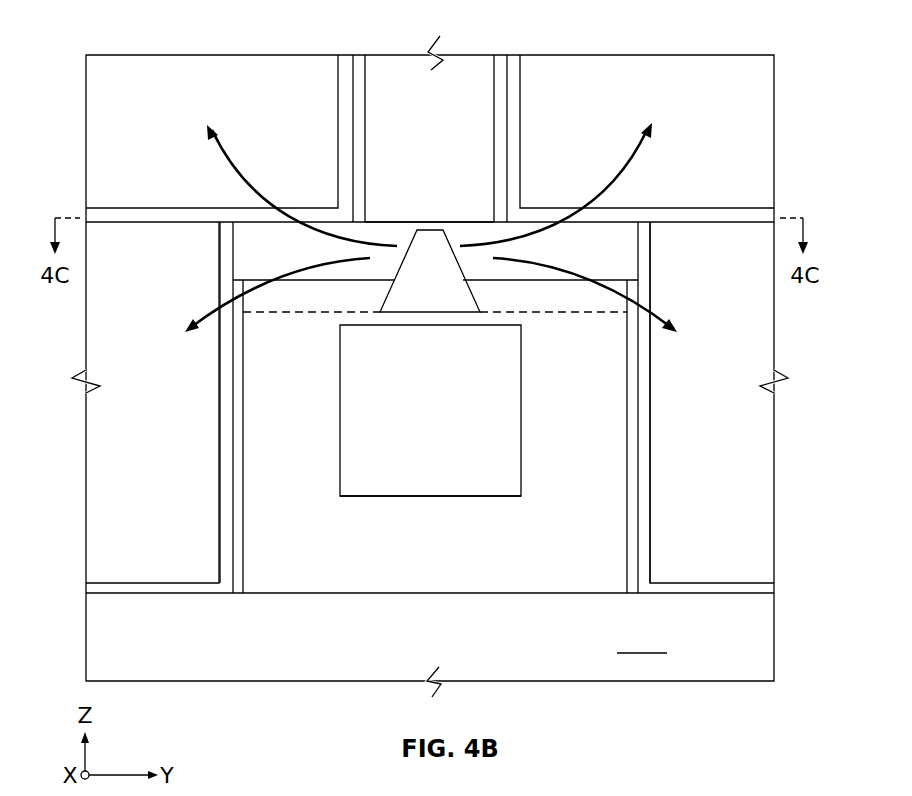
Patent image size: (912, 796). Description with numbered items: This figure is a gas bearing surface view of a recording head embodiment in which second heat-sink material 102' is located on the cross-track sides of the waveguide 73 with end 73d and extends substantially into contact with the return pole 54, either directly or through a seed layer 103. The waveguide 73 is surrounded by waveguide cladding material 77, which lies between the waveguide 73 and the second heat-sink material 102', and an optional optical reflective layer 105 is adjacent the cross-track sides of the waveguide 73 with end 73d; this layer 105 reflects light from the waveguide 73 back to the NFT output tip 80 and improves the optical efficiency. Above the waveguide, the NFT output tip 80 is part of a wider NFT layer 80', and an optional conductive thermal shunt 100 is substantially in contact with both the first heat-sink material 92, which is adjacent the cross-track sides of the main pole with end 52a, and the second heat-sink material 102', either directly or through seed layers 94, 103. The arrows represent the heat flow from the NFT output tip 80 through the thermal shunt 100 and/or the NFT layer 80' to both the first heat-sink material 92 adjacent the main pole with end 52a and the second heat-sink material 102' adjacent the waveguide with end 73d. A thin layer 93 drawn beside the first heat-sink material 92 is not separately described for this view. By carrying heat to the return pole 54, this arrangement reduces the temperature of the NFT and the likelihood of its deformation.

The first heat-sink material 92 is at (133, 160).
The seed layer 94 is at (347, 67).
The side gap layer 93 is at (359, 68).
The main pole end 52a is at (428, 107).
The NFT layer 80' is at (325, 271).
The NFT output tip 80 is at (332, 319).
The thermal shunt 100 is at (617, 237).
The waveguide cladding material 77 is at (262, 348).
The waveguide 73 is at (463, 497).
The waveguide end 73d is at (390, 445).
The second heat-sink material 102' is at (434, 402).
The seed layer 103 is at (223, 431).
The optical reflective layer 105 is at (235, 470).
The return pole 54 is at (707, 662).